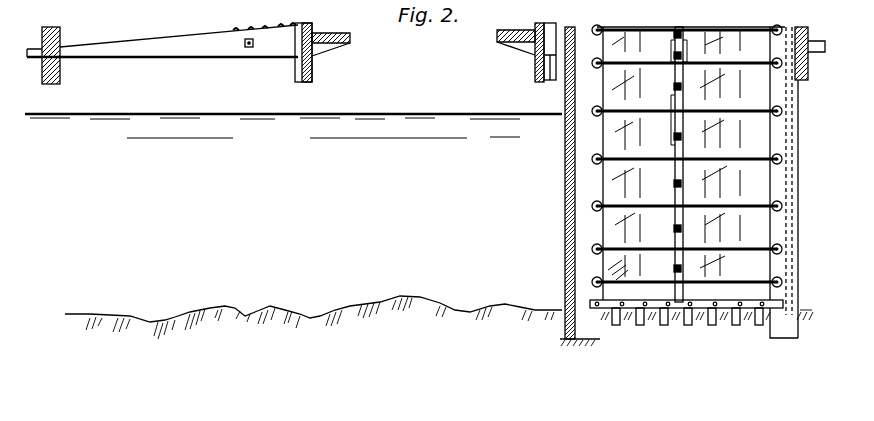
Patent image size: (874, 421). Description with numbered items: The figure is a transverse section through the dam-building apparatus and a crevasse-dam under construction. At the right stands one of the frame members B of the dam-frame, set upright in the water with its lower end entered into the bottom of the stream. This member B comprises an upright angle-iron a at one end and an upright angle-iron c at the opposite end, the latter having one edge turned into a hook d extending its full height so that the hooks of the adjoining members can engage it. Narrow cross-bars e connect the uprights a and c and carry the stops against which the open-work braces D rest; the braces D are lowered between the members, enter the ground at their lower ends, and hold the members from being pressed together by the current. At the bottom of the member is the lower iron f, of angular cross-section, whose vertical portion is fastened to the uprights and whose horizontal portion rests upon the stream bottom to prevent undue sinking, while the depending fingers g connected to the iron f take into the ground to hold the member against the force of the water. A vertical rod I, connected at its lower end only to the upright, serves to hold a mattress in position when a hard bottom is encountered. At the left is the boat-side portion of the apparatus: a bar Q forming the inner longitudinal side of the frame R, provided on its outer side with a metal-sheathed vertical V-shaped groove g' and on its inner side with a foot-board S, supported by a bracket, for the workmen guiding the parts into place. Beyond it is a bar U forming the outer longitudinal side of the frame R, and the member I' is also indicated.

The bars U is at (62, 33).
The frames R is at (179, 34).
The horizontal beam I' is at (162, 46).
The vertical V-shaped grooves g' is at (272, 44).
The foot-boards S is at (351, 38).
The bars Q is at (312, 82).
The frame members B is at (580, 186).
The upright angle-iron a is at (567, 113).
The cross-bars e is at (649, 66).
The open-work braces D is at (684, 106).
The hook d is at (758, 118).
The upright angle-iron c is at (800, 120).
The vertical rods I is at (795, 209).
The lower iron f is at (676, 308).
The depending fingers g is at (685, 333).